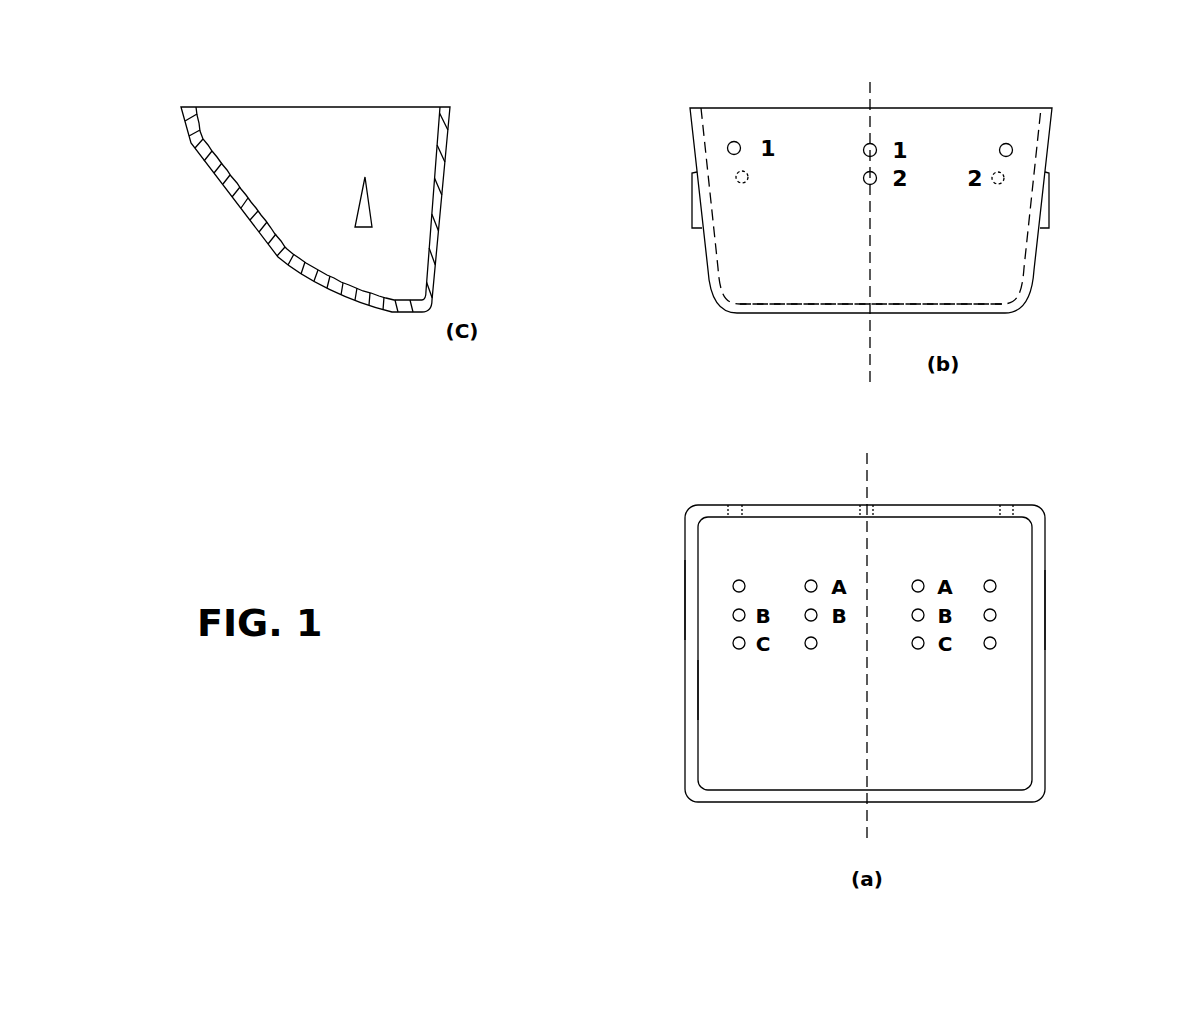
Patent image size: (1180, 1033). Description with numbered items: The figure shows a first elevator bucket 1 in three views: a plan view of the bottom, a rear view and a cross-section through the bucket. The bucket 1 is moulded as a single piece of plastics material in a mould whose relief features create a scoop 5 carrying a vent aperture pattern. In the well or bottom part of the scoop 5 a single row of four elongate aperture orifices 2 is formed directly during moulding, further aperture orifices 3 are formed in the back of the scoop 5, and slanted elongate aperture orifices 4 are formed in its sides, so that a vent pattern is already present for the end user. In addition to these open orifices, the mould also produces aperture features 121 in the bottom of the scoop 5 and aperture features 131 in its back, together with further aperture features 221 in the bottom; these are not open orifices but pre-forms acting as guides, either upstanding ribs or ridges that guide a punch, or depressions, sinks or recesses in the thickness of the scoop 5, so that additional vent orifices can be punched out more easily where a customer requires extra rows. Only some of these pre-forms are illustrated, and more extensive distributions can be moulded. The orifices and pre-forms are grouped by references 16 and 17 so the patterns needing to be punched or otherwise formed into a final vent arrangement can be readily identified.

The elevator bucket 1 is at (474, 120).
The elongate aperture orifices 2 is at (367, 307).
The aperture orifices 3 is at (443, 145).
The slanted elongate aperture orifices 4 is at (367, 215).
The scoop 5 is at (253, 217).
The grouping reference 16 is at (767, 589).
The grouping reference 17 is at (973, 146).
The aperture features 121 is at (733, 616).
The aperture features 131 is at (1004, 181).
The aperture features 221 is at (996, 646).